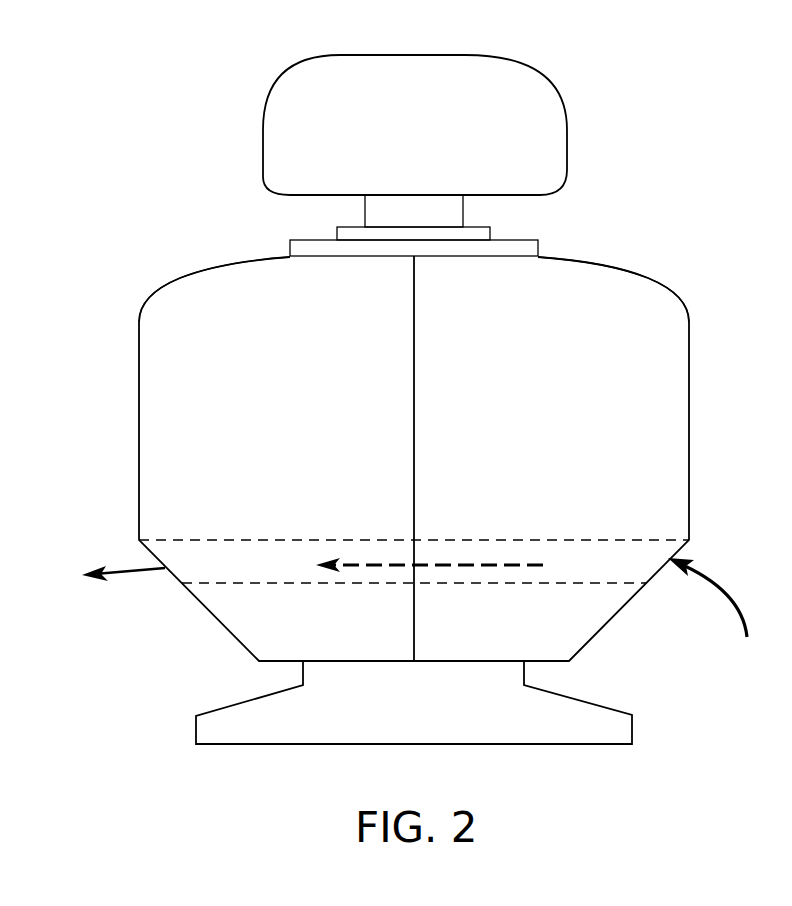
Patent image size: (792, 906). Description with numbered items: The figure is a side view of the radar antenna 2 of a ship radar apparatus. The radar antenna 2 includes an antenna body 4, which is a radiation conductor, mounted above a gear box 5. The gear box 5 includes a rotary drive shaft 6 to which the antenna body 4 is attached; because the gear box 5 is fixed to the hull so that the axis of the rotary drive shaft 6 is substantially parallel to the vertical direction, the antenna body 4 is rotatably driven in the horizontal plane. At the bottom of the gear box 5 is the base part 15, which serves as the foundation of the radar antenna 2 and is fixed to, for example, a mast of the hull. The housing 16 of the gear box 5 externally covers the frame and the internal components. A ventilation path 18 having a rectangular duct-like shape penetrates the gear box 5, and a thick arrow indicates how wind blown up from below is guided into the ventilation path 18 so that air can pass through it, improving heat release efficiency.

The radar antenna 2 is at (706, 115).
The antenna body 4 is at (270, 125).
The gear box 5 is at (399, 431).
The rotary drive shaft 6 is at (453, 208).
The base part 15 is at (620, 730).
The housing 16 is at (178, 280).
The ventilation path 18 is at (538, 540).